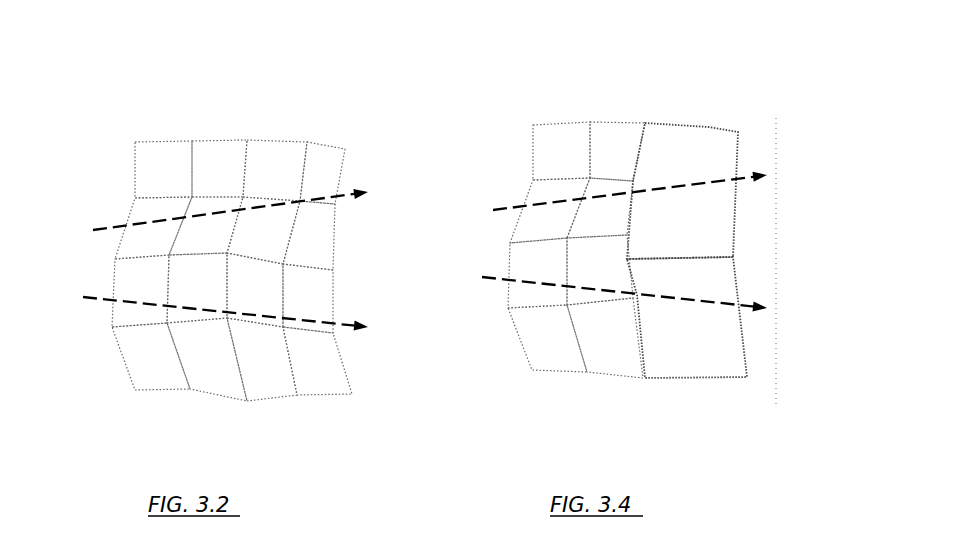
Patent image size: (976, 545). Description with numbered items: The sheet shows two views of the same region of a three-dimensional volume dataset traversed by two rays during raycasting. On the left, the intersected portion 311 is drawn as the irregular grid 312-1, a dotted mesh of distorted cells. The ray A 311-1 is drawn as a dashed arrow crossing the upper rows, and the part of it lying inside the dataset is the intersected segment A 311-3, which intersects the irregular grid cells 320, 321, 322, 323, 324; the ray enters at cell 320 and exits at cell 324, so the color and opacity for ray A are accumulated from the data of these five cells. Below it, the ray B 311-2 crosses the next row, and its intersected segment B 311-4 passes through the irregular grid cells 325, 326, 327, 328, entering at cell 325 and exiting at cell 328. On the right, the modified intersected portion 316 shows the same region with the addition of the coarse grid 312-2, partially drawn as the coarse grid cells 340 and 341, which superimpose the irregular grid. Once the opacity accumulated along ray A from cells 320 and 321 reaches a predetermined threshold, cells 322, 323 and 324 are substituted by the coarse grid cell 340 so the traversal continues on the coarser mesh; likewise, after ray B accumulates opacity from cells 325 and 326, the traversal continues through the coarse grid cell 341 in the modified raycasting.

In FIG. 3.2, the intersected portion 311 is at (216, 111).
In FIG. 3.2, the ray A 311-1 is at (350, 211).
In FIG. 3.4, the ray A 311-1 is at (753, 193).
In FIG. 3.2, the ray B 311-2 is at (355, 307).
In FIG. 3.4, the ray B 311-2 is at (754, 289).
In FIG. 3.2, the intersected segment A 311-3 is at (189, 204).
In FIG. 3.4, the intersected segment A 311-3 is at (592, 189).
In FIG. 3.2, the intersected segment B 311-4 is at (255, 327).
In FIG. 3.4, the intersected segment B 311-4 is at (657, 309).
In FIG. 3.2, the irregular grid 312-1 is at (283, 129).
In FIG. 3.4, the irregular grid 312-1 is at (570, 108).
In FIG. 3.4, the coarse grid 312-2 is at (716, 117).
In FIG. 3.4, the modified intersected portion 316 is at (679, 93).
In FIG. 3.2, the irregular grid cell 320 is at (131, 253).
In FIG. 3.4, the irregular grid cell 320 is at (526, 233).
In FIG. 3.2, the irregular grid cell 321 is at (185, 250).
In FIG. 3.4, the irregular grid cell 321 is at (580, 230).
In FIG. 3.2, the irregular grid cell 322 is at (246, 243).
In FIG. 3.2, the irregular grid cell 323 is at (256, 180).
In FIG. 3.2, the irregular grid cell 324 is at (305, 180).
In FIG. 3.2, the irregular grid cell 325 is at (123, 288).
In FIG. 3.4, the irregular grid cell 325 is at (520, 275).
In FIG. 3.2, the irregular grid cell 326 is at (178, 288).
In FIG. 3.4, the irregular grid cell 326 is at (574, 275).
In FIG. 3.2, the irregular grid cell 327 is at (235, 297).
In FIG. 3.2, the irregular grid cell 328 is at (294, 310).
In FIG. 3.4, the coarse grid cell 340 is at (671, 165).
In FIG. 3.4, the coarse grid cell 341 is at (696, 353).